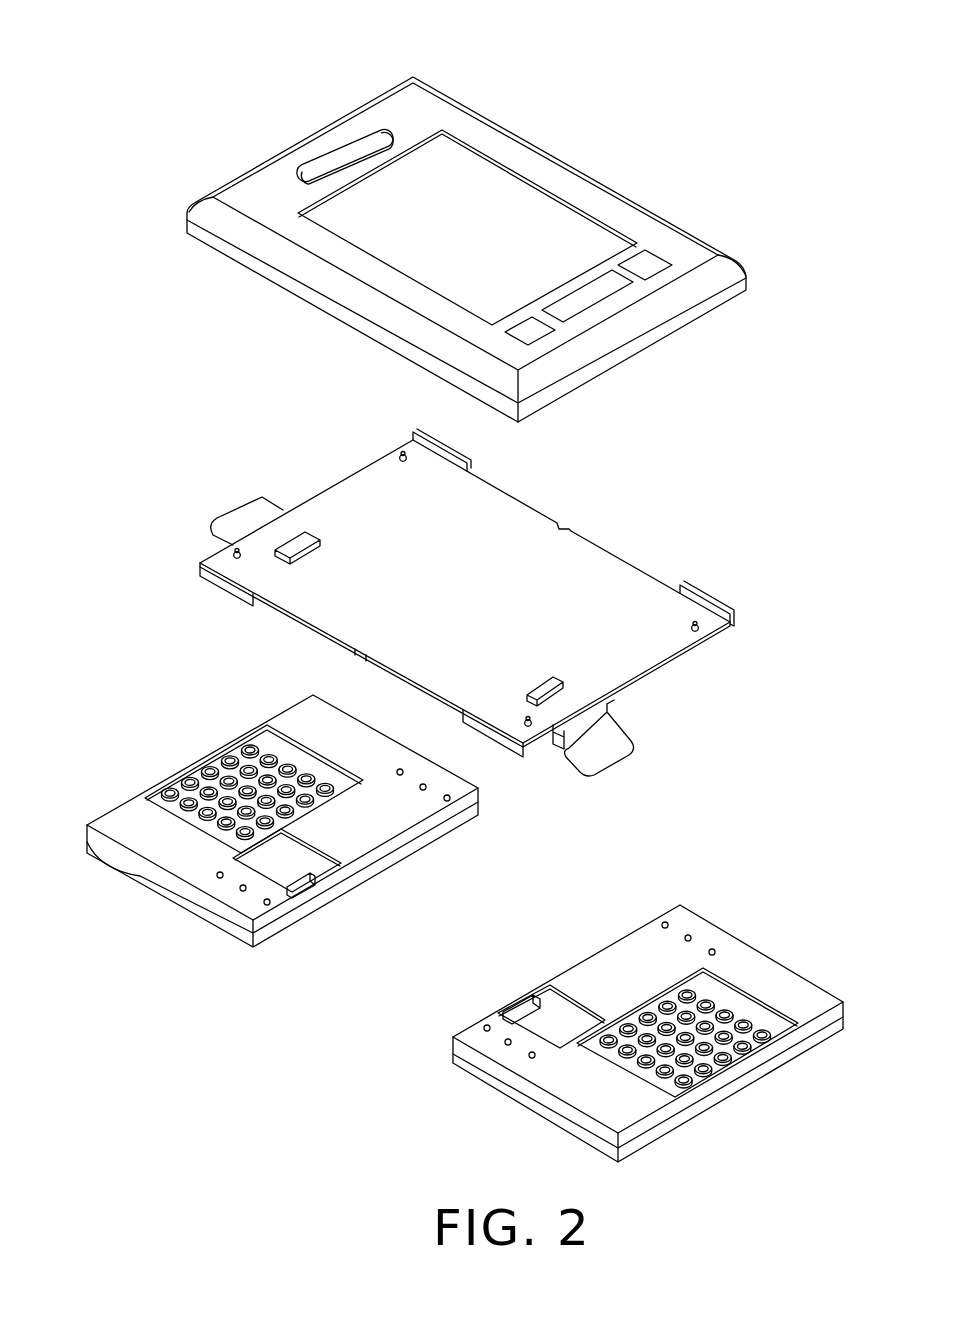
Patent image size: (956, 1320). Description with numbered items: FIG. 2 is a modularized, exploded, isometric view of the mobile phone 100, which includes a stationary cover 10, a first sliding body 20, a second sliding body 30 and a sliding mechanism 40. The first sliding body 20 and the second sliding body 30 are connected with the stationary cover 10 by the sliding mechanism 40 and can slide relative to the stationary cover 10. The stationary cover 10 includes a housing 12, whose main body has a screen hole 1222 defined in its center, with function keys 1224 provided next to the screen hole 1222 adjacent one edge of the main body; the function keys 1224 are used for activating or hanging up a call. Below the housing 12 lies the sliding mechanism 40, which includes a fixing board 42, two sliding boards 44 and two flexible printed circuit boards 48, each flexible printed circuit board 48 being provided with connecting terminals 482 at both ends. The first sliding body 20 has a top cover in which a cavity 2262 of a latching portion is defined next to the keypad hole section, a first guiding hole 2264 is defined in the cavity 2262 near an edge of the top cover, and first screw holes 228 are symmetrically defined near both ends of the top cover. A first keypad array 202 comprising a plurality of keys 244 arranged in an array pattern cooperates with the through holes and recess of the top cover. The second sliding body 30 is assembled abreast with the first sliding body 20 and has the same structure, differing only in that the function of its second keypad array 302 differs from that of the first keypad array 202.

The mobile phone 100 is at (444, 24).
The stationary cover 10 is at (176, 194).
The housing 12 is at (558, 182).
The screen hole 1222 is at (455, 165).
The function keys 1224 is at (650, 263).
The sliding mechanism 40 is at (316, 474).
The fixing board 42 is at (477, 522).
The sliding board 44 is at (710, 610).
The flexible printed circuit board 48 is at (607, 748).
The connecting terminal 482 is at (565, 681).
The first sliding body 20 is at (140, 837).
The first keypad array 202 is at (225, 755).
The keys 244 is at (185, 780).
The first screw holes 228 is at (243, 890).
The cavity 2262 is at (303, 857).
The first guiding hole 2264 is at (315, 879).
The second sliding body 30 is at (573, 1088).
The second keypad array 302 is at (720, 1058).